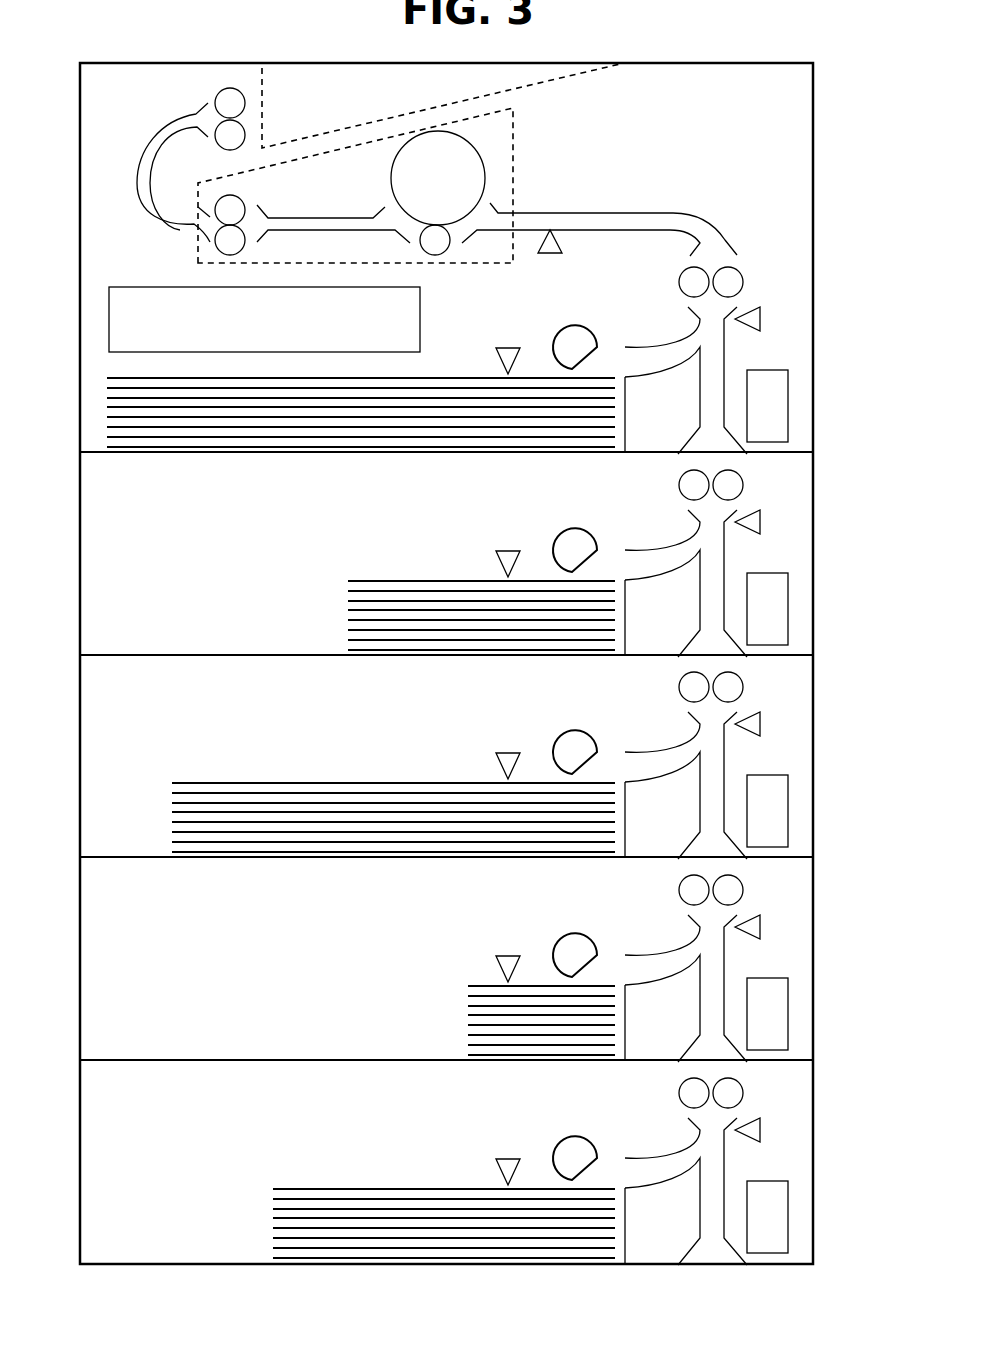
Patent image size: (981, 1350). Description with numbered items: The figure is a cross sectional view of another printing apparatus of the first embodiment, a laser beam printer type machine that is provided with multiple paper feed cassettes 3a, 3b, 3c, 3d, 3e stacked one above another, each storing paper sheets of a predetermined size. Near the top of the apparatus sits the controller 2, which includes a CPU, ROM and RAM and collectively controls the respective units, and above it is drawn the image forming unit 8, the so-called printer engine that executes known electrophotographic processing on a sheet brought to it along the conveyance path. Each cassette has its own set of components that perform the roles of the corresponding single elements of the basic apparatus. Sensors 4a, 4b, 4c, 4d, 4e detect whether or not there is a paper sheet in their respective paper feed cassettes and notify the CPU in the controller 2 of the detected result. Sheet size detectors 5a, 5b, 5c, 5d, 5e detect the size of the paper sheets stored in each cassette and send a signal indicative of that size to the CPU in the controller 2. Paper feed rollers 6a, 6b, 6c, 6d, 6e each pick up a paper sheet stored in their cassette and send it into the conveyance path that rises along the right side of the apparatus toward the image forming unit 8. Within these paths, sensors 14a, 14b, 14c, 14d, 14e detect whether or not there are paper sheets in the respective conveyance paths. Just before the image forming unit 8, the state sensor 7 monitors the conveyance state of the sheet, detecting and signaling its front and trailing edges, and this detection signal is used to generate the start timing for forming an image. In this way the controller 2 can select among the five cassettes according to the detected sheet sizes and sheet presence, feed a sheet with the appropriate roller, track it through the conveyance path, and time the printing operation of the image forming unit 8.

The controller 2 is at (120, 325).
The paper feed cassette 3a is at (88, 412).
The paper feed cassette 3b is at (321, 597).
The paper feed cassette 3c is at (321, 800).
The paper feed cassette 3d is at (321, 1003).
The paper feed cassette 3e is at (321, 1206).
The sensor 4a is at (508, 352).
The sensor 4b is at (511, 539).
The sensor 4c is at (510, 741).
The sensor 4d is at (511, 944).
The sensor 4e is at (511, 1147).
The sheet size detector 5a is at (767, 407).
The sheet size detector 5b is at (807, 609).
The sheet size detector 5c is at (806, 811).
The sheet size detector 5d is at (807, 1014).
The sheet size detector 5e is at (807, 1217).
The paper feed roller 6a is at (571, 334).
The paper feed roller 6b is at (575, 525).
The paper feed roller 6c is at (575, 727).
The paper feed roller 6d is at (575, 930).
The paper feed roller 6e is at (575, 1133).
The state sensor 7 is at (557, 247).
The image forming unit 8 is at (513, 162).
The sensor 14a is at (760, 319).
The sensor 14b is at (808, 522).
The sensor 14c is at (807, 724).
The sensor 14d is at (808, 927).
The sensor 14e is at (808, 1130).